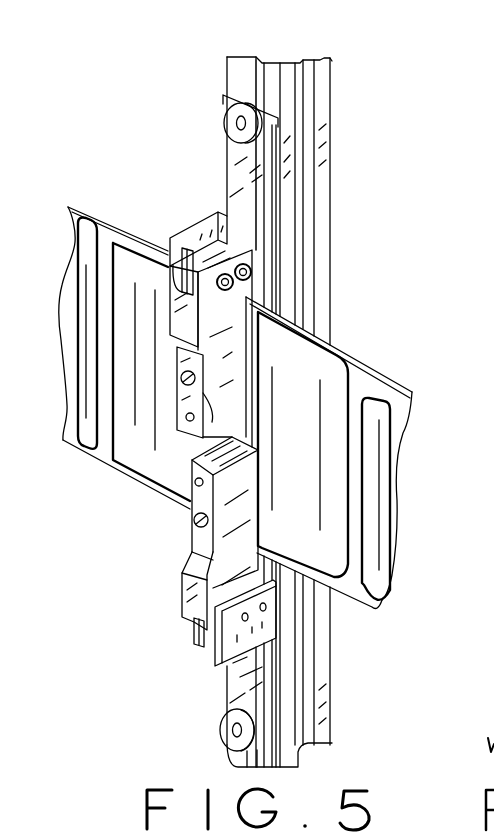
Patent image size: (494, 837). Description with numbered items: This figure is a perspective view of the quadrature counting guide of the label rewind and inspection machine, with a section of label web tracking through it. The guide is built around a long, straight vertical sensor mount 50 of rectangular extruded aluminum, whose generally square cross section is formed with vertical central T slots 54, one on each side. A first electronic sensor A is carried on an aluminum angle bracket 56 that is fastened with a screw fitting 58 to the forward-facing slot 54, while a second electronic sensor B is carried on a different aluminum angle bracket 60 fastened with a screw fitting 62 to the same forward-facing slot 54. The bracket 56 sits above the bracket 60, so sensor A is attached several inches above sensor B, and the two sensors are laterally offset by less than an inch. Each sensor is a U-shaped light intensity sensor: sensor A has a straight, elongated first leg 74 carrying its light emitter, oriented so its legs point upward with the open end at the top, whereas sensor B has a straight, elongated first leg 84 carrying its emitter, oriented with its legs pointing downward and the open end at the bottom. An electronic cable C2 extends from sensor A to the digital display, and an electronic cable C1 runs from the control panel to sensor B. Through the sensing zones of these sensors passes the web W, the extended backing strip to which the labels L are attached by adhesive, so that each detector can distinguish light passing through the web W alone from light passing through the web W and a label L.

The sensor mount 50 is at (333, 118).
The T slot 54 is at (253, 78).
The screw fitting 58 is at (225, 117).
The screw fitting 62 is at (219, 735).
The aluminum angle bracket 56 is at (193, 225).
The electronic cable C2 is at (178, 245).
The first electronic sensor A is at (182, 323).
The first leg 74 is at (205, 403).
The first leg 84 is at (245, 503).
The second electronic sensor B is at (183, 597).
The electronic cable C1 is at (195, 640).
The aluminum angle bracket 60 is at (240, 678).
The label L is at (82, 285).
The web W is at (358, 382).